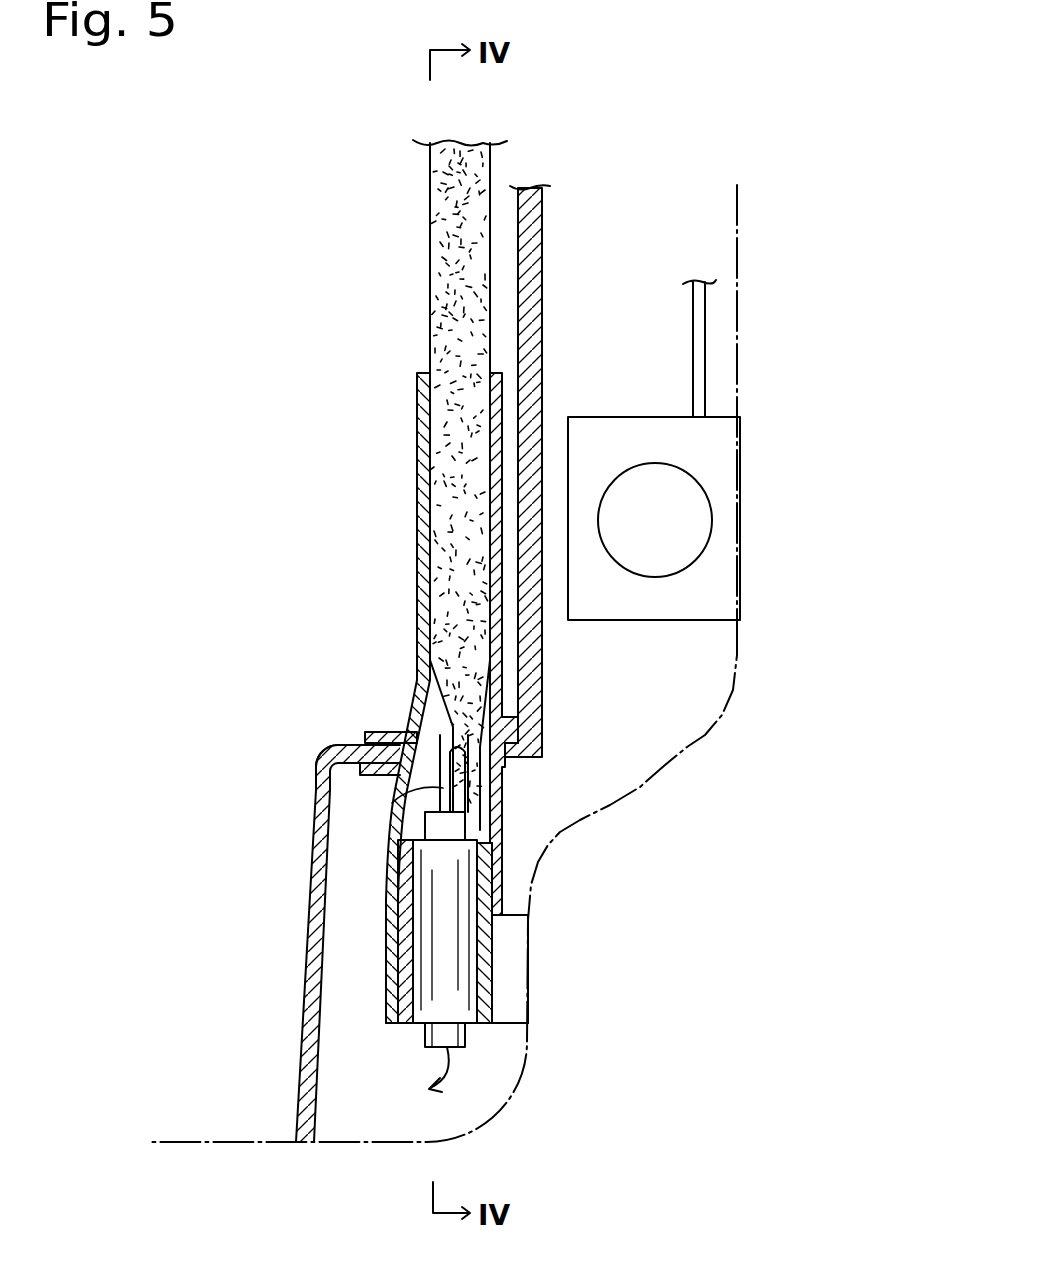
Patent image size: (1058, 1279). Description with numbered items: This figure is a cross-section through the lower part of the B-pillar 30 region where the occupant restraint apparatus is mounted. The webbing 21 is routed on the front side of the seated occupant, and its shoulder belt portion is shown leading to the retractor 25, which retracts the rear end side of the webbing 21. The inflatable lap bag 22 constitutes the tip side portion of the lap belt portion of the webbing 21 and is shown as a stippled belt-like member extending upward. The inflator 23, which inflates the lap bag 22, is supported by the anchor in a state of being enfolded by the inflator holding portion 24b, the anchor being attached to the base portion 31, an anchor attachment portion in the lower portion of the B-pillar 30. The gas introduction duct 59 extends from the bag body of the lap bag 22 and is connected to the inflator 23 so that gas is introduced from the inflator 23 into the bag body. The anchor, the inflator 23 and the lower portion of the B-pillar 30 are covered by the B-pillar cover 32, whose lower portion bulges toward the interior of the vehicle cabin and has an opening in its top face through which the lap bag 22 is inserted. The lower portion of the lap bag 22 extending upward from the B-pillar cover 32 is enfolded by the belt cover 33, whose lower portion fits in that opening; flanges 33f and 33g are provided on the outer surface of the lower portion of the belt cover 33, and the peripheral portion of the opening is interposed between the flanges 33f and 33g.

The lap bag 22 is at (430, 222).
The belt cover 33 is at (417, 538).
The flange 33f is at (388, 732).
The flange 33g is at (317, 770).
The B-pillar cover 32 is at (305, 1000).
The gas introduction duct 59 is at (398, 802).
The inflator 23 is at (428, 958).
The inflator holding portion 24b is at (495, 958).
The base portion 31 is at (520, 1008).
The B-pillar 30 is at (737, 205).
The retractor 25 is at (722, 585).
The webbing 21 is at (687, 323).